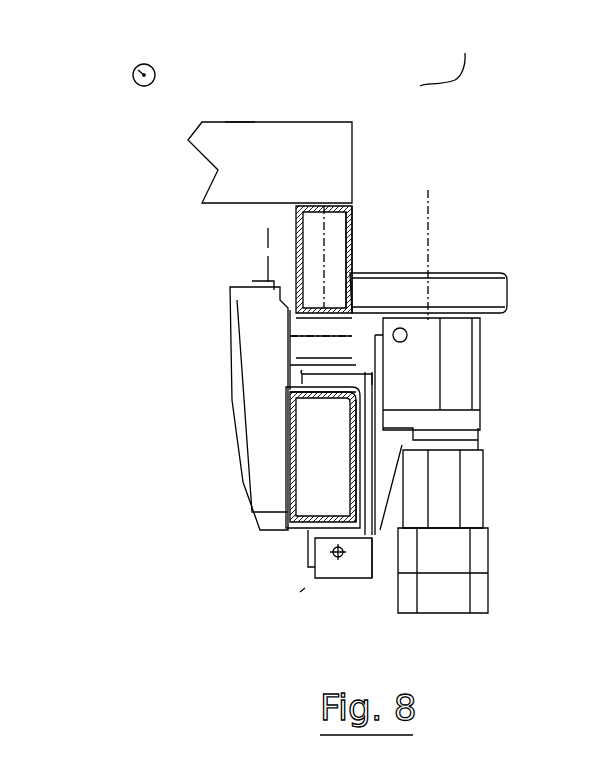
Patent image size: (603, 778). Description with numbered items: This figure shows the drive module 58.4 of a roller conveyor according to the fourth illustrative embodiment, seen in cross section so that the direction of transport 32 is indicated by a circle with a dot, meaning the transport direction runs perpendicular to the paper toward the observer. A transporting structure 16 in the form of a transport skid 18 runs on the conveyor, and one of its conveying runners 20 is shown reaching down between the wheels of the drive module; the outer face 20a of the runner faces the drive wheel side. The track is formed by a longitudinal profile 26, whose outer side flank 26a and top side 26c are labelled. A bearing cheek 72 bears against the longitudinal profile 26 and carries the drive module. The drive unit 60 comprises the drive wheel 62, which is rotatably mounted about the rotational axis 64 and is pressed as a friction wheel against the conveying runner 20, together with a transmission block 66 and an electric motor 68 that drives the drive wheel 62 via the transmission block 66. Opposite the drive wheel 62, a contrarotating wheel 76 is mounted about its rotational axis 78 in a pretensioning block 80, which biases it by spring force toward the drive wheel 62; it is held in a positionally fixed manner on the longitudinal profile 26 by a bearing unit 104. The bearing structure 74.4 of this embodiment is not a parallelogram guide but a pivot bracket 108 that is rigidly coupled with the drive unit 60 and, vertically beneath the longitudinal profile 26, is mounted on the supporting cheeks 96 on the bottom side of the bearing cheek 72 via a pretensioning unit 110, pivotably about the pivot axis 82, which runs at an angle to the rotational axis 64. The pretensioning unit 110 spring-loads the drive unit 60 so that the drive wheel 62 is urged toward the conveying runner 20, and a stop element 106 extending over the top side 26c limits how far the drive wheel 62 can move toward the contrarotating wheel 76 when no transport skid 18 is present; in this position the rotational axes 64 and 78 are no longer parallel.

The transporting structure 16 is at (240, 121).
The transport skid 18 is at (317, 121).
The conveying runner 20 is at (294, 218).
The outer face of conveying runner 20a is at (362, 207).
The longitudinal profile 26 is at (320, 430).
The outer side flank 26a is at (353, 457).
The top side 26c is at (336, 390).
The direction of transport 32 is at (133, 70).
The drive module 58.4 is at (410, 96).
The drive unit 60 is at (513, 572).
The drive wheel 62 is at (492, 292).
The rotational axis 64 is at (430, 238).
The transmission block 66 is at (458, 386).
The motor 68 is at (468, 498).
The bearing cheek 72 is at (284, 410).
The bearing structure 74.4 is at (298, 593).
The contrarotating wheel 76 is at (290, 290).
The rotational axis 78 is at (266, 240).
The pretensioning block 80 is at (255, 290).
The pivot axis 82 is at (340, 553).
The supporting cheek 96 is at (311, 543).
The bearing unit 104 is at (257, 373).
The stop element 106 is at (337, 372).
The pivot bracket 108 is at (360, 572).
The pretensioning unit 110 is at (323, 568).